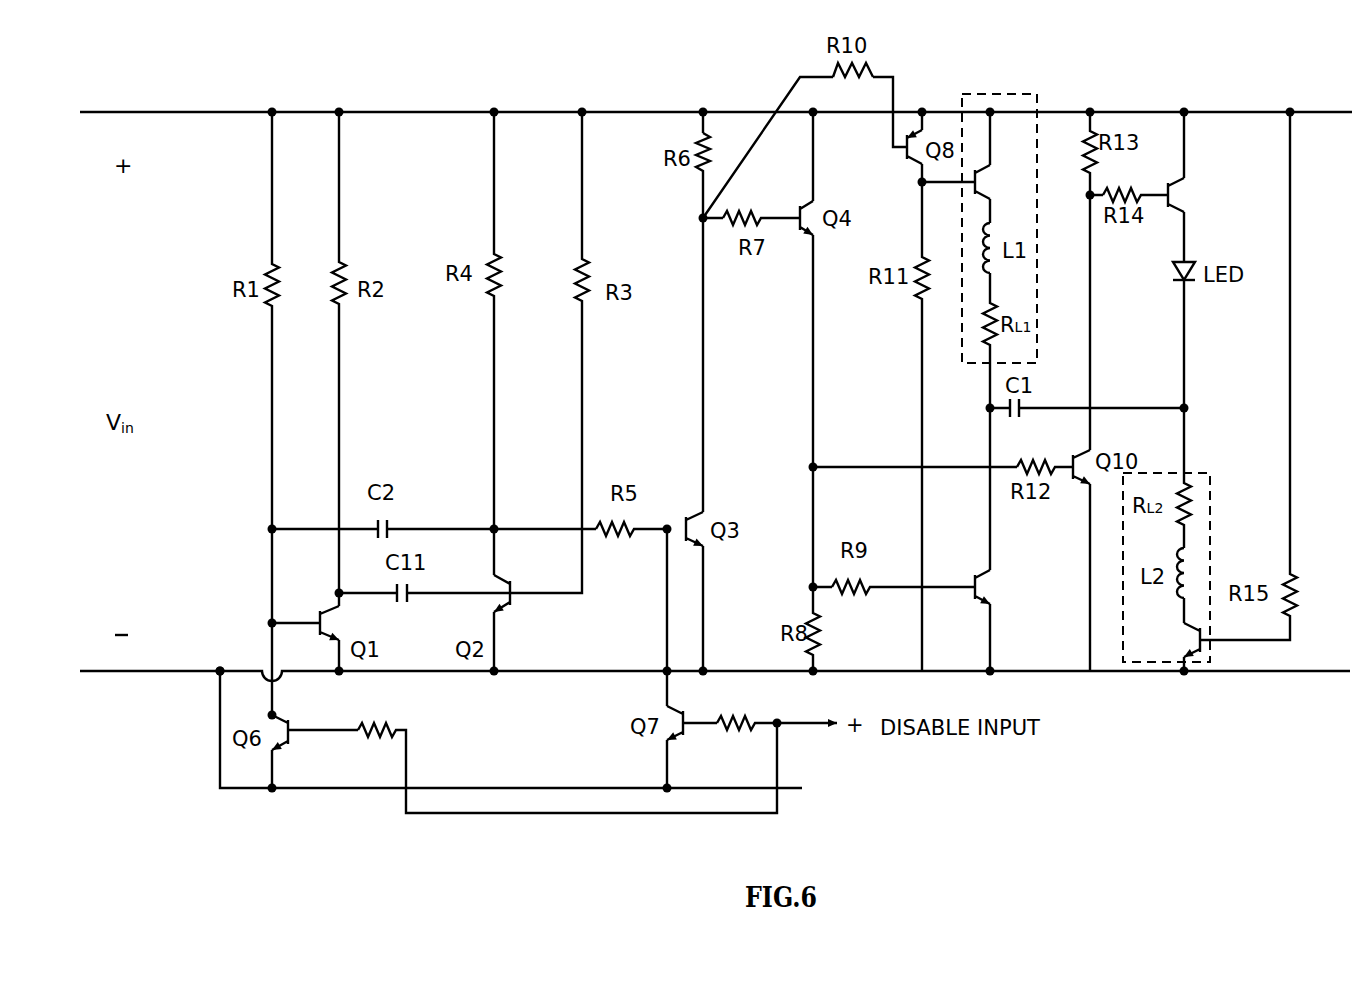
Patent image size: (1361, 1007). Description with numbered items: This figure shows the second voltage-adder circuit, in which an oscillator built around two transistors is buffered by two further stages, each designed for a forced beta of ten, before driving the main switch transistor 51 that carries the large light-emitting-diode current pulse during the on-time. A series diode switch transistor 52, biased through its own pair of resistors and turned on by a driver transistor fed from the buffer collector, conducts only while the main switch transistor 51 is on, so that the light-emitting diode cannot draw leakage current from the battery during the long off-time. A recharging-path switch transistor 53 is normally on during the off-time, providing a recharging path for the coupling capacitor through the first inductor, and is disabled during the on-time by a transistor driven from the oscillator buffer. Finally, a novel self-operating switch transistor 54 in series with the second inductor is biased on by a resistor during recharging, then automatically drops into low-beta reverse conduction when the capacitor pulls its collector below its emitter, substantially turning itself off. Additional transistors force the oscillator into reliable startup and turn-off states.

The transistor Q5 51 is at (1024, 589).
The transistor Q11 52 is at (1224, 195).
The transistor Q9 53 is at (1023, 182).
The transistor Q12 54 is at (1148, 641).